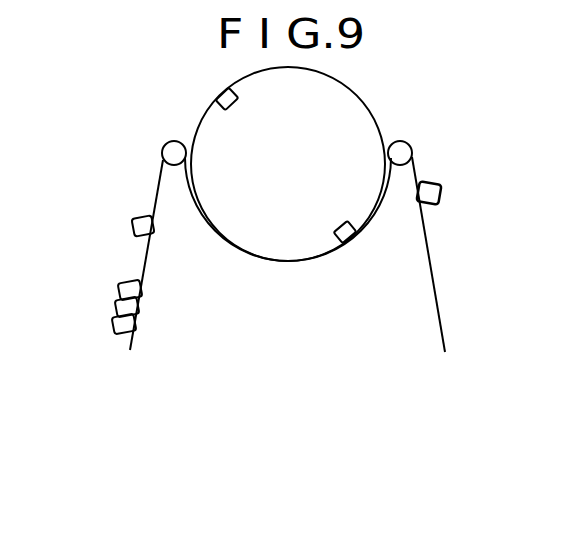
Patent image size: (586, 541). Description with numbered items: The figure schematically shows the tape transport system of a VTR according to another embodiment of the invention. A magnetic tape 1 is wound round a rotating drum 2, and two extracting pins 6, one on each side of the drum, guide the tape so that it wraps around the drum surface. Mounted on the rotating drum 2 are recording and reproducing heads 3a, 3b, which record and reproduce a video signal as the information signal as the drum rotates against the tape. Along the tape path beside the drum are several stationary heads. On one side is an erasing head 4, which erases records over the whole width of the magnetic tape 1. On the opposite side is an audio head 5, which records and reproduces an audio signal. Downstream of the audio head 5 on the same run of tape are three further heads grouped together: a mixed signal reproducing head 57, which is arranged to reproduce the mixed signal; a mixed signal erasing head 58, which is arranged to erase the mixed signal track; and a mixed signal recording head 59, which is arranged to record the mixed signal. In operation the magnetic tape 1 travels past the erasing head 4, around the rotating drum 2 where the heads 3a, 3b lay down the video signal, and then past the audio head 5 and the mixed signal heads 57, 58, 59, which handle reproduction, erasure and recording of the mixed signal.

The magnetic tape 1 is at (428, 262).
The rotating drum 2 is at (362, 112).
The recording and reproducing head 3a is at (240, 111).
The recording and reproducing head 3b is at (332, 222).
The erasing head 4 is at (440, 190).
The audio head 5 is at (133, 226).
The extracting pins 6 is at (164, 146).
The mixed signal reproducing head 57 is at (119, 289).
The mixed signal erasing head 58 is at (116, 308).
The mixed signal recording head 59 is at (113, 323).